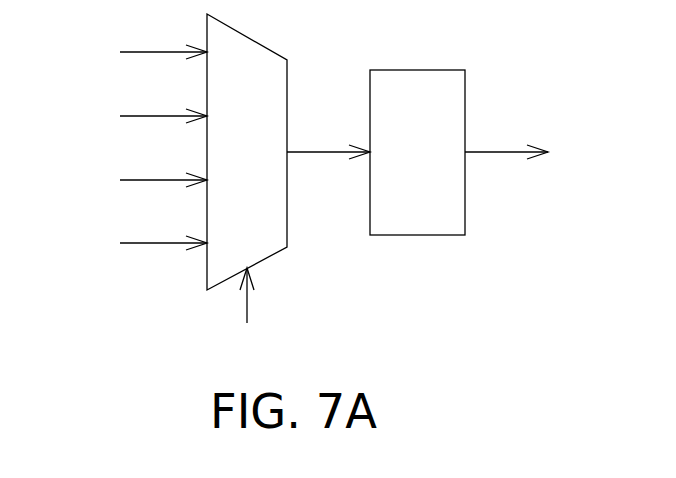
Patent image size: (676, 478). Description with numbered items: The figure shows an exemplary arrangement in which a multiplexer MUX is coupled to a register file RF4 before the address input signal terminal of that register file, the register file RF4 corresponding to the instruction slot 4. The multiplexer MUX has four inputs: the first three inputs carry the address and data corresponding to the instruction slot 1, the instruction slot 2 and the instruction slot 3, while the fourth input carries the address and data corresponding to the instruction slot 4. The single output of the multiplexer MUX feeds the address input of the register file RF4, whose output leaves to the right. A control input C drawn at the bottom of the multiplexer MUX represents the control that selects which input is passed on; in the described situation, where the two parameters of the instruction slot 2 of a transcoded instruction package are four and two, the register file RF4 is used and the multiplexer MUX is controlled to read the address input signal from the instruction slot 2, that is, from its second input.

The multiplexer MUX is at (247, 152).
The instruction slot 1 is at (151, 53).
The instruction slot 2 is at (151, 116).
The instruction slot 3 is at (151, 179).
The instruction slot 4 is at (151, 242).
The multiplexer control signal C is at (249, 316).
The register file RF4 is at (417, 152).